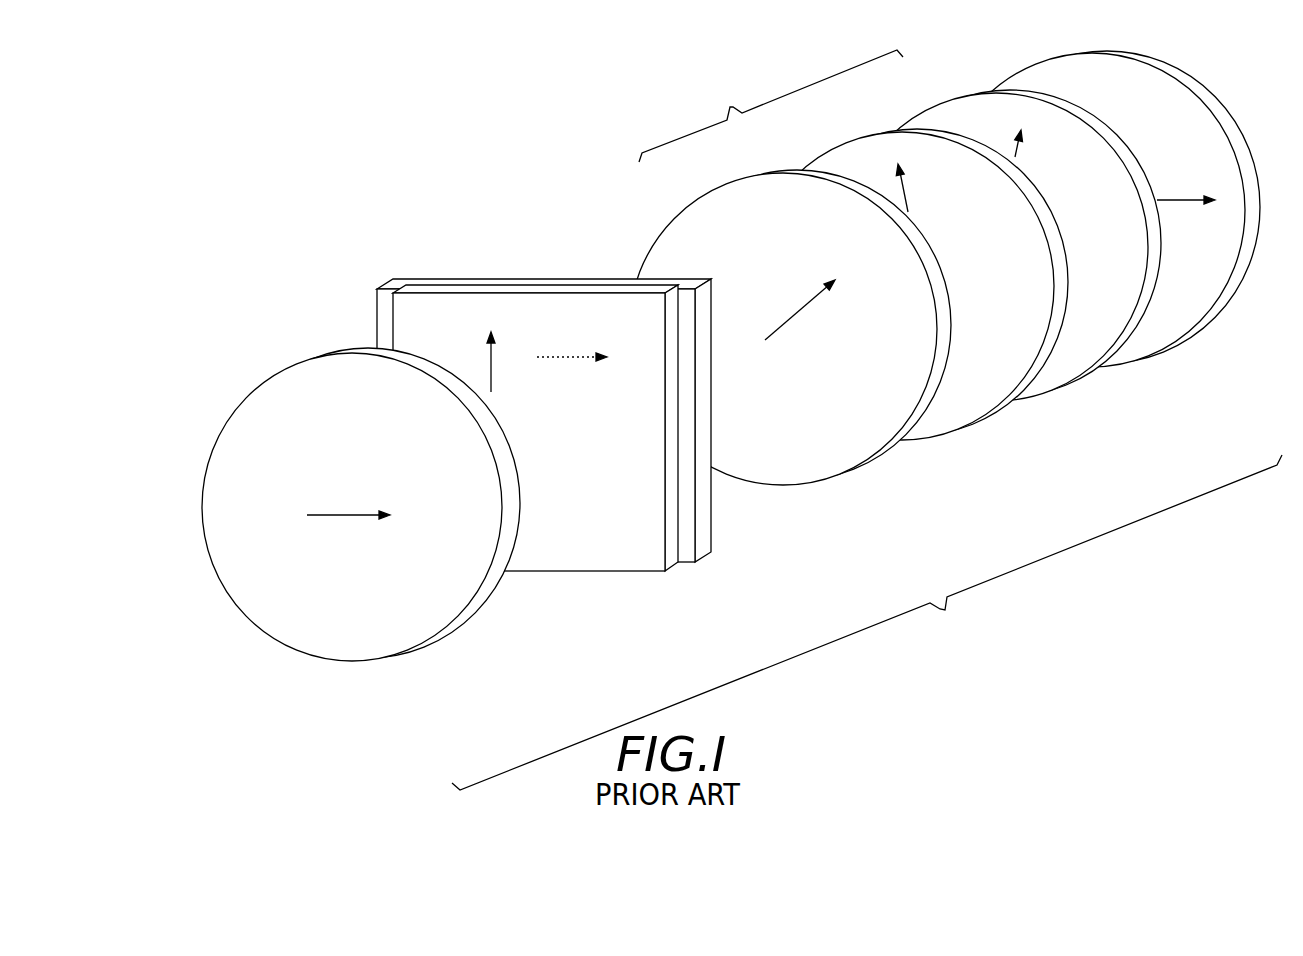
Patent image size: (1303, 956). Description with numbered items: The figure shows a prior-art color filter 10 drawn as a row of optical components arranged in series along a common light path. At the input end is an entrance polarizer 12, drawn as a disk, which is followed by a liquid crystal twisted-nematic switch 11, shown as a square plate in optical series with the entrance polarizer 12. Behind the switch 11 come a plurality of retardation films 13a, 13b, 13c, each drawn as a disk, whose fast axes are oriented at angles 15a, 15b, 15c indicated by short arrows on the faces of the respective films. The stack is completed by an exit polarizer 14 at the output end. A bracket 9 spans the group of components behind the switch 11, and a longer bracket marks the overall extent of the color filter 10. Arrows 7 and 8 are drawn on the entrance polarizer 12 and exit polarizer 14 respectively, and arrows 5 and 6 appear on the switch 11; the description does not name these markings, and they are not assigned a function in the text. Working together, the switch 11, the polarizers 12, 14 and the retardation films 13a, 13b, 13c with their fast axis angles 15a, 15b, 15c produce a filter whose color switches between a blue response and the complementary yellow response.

The vertical polarization direction arrow 5 is at (488, 365).
The horizontal polarization direction arrow 6 is at (552, 356).
The input light propagation direction 7 is at (333, 513).
The output light propagation direction 8 is at (1180, 196).
The retarder stack 9 is at (771, 106).
The color filter 10 is at (867, 622).
The liquid crystal twisted-nematic switch 11 is at (711, 557).
The entrance polarizer 12 is at (423, 642).
The retardation film 13a is at (817, 483).
The retardation film 13b is at (945, 437).
The retardation film 13c is at (1040, 398).
The exit polarizer 14 is at (1158, 353).
The fast axis angle 15a is at (792, 317).
The fast axis angle 15b is at (906, 200).
The fast axis angle 15c is at (1015, 155).